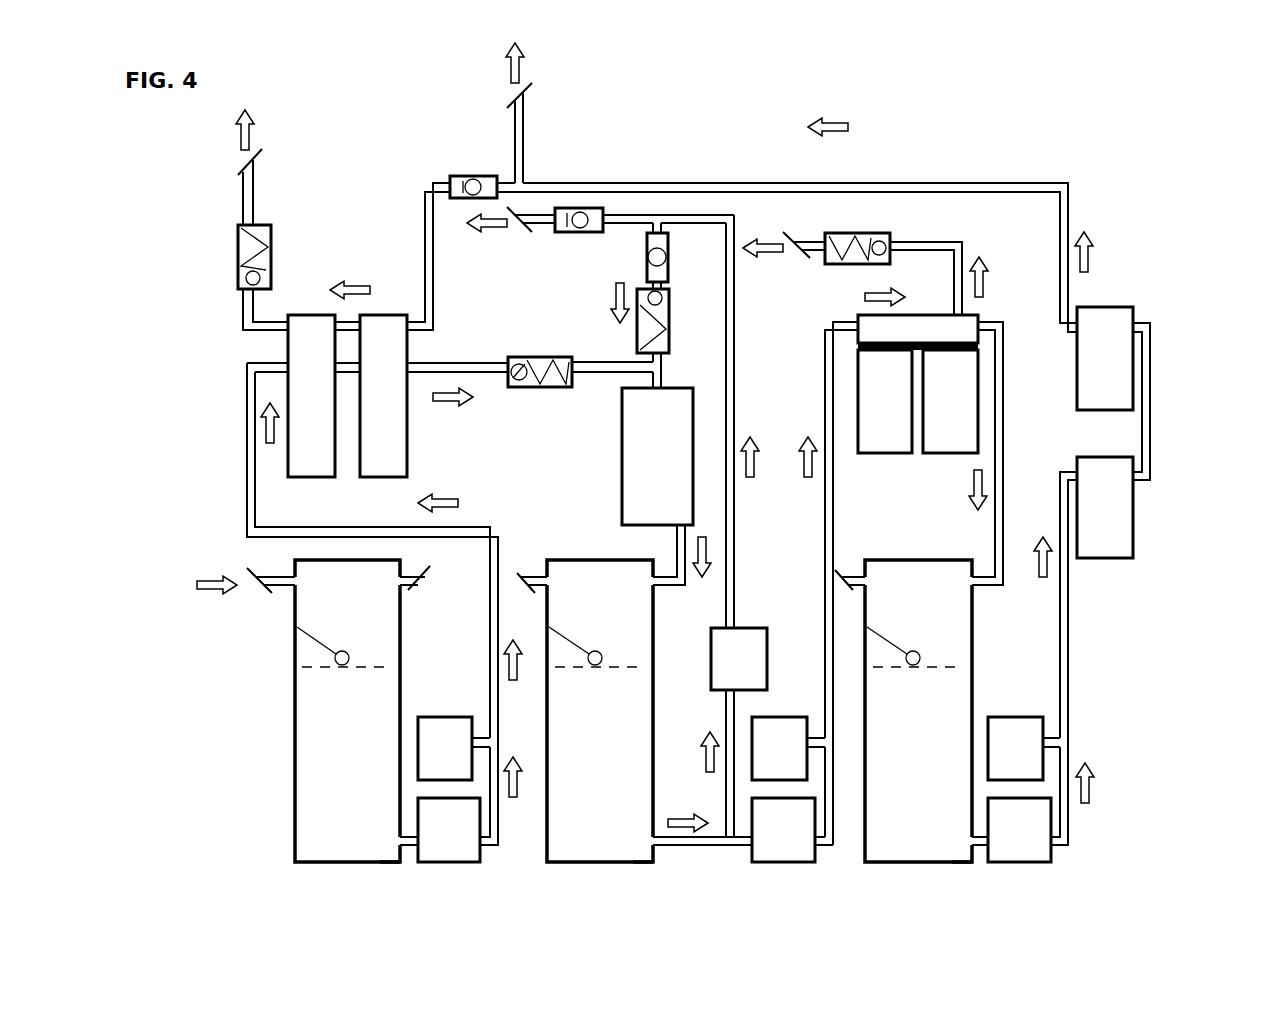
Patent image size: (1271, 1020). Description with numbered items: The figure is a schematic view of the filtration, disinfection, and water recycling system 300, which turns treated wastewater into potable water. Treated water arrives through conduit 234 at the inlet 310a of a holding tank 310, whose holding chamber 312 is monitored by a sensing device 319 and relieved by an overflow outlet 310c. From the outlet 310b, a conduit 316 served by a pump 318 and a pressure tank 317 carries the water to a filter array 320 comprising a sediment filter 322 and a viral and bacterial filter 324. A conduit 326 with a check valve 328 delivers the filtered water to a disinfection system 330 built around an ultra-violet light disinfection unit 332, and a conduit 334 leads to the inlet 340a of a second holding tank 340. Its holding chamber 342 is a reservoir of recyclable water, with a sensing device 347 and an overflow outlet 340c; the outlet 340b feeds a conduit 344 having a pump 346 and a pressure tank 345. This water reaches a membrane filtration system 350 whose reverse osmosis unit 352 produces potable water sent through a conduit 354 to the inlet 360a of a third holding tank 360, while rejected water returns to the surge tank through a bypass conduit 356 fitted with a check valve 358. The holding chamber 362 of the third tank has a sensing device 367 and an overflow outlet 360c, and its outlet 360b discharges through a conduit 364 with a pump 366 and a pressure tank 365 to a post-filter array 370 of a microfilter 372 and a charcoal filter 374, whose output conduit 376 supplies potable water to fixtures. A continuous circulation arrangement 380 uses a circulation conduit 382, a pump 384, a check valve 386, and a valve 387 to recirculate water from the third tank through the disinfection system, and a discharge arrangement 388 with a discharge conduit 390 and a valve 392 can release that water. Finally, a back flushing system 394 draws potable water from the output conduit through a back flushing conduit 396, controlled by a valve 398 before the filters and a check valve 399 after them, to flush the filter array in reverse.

The filtration, disinfection, and water recycling system 300 is at (1152, 137).
The conduit 234 is at (290, 575).
The holding tank 310 is at (288, 852).
The inlet 310a is at (292, 585).
The outlet 310b is at (392, 847).
The overflow outlet 310c is at (407, 576).
The holding chamber 312 is at (357, 797).
The conduit 316 is at (475, 525).
The pressure tank 317 is at (461, 765).
The pump 318 is at (468, 848).
The sensing device 319 is at (349, 656).
The filter array 320 is at (215, 447).
The sediment filter 322 is at (310, 462).
The viral and bacterial filter 324 is at (383, 462).
The conduit 326 is at (433, 362).
The check valve 328 is at (580, 351).
The disinfection system 330 is at (608, 448).
The ultra-violet light disinfection unit 332 is at (670, 469).
The conduit 334 is at (677, 552).
The holding tank 340 is at (538, 852).
The inlet 340a is at (657, 585).
The outlet 340b is at (645, 847).
The overflow outlet 340c is at (547, 570).
The holding chamber 342 is at (610, 797).
The conduit 344 is at (823, 568).
The pressure tank 345 is at (794, 765).
The pump 346 is at (801, 848).
The sensing device 347 is at (602, 657).
The membrane filtration system 350 is at (920, 463).
The reverse osmosis unit 352 is at (862, 325).
The conduit 354 is at (1003, 452).
The bypass conduit 356 is at (940, 240).
The check valve 358 is at (867, 238).
The holding tank 360 is at (850, 852).
The inlet 360a is at (972, 582).
The outlet 360b is at (962, 847).
The overflow outlet 360c is at (865, 578).
The holding chamber 362 is at (930, 797).
The conduit 364 is at (1070, 675).
The pressure tank 365 is at (1029, 765).
The pump 366 is at (1036, 848).
The sensing device 367 is at (920, 657).
The post-filter array 370 is at (1162, 397).
The microfilter 372 is at (1110, 533).
The charcoal filter 374 is at (1100, 323).
The output conduit 376 is at (947, 190).
The continuous circulation arrangement 380 is at (712, 207).
The circulation conduit 382 is at (737, 378).
The pump 384 is at (757, 675).
The check valve 386 is at (662, 328).
The valve 387 is at (660, 273).
The discharge arrangement 388 is at (622, 213).
The discharge conduit 390 is at (532, 215).
The valve 392 is at (567, 212).
The back flushing system 394 is at (403, 270).
The back flushing conduit 396 is at (243, 306).
The valve 398 is at (490, 187).
The check valve 399 is at (240, 248).